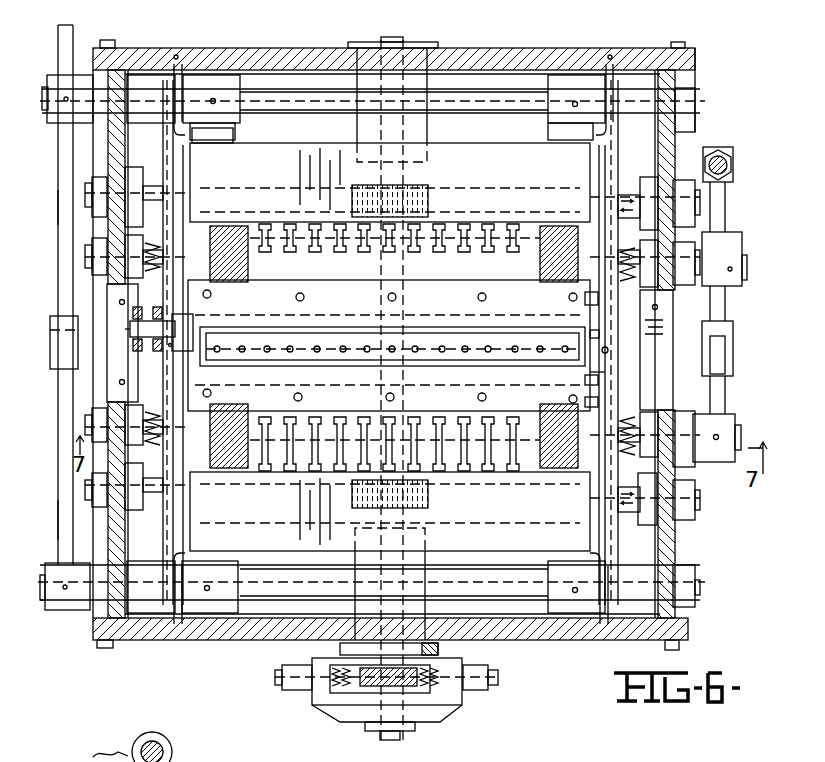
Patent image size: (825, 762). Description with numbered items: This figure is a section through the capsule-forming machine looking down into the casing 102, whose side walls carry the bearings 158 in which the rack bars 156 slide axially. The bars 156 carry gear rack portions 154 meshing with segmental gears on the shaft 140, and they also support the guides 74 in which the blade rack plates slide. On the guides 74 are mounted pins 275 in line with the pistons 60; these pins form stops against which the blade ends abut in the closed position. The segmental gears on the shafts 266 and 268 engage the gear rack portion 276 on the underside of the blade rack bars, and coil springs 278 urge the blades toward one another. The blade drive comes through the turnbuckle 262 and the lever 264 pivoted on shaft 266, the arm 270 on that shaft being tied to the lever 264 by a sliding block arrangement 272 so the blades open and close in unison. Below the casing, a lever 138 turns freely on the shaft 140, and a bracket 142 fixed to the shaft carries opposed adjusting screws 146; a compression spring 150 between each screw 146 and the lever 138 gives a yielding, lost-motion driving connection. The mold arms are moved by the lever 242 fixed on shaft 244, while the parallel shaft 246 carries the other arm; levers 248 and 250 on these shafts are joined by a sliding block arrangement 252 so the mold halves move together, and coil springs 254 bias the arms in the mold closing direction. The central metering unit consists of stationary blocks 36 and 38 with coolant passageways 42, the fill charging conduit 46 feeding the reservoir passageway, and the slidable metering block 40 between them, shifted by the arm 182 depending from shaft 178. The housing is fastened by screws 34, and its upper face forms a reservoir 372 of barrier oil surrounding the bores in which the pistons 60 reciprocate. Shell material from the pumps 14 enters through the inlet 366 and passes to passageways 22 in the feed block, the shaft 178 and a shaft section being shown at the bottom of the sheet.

The pumps 14 is at (278, 159).
The passageways 22 is at (368, 425).
The screws 34 is at (486, 298).
The stationary block 36 is at (346, 305).
The stationary block 38 is at (442, 396).
The metering block 40 is at (188, 322).
The internal passageways 42 is at (600, 300).
The fill charging conduit 46 is at (600, 334).
The pistons 60 is at (290, 345).
The guides 74 is at (165, 391).
The casing 102 is at (590, 636).
The lever 138 is at (370, 680).
The shaft 140 is at (426, 522).
The bracket 142 is at (325, 706).
The adjusting screws 146 is at (283, 681).
The compression spring 150 is at (345, 658).
The gear rack portions 154 is at (428, 190).
The bars 156 is at (150, 190).
The bearings 158 is at (131, 170).
The shaft 178 is at (160, 748).
The arm 182 is at (137, 348).
The lever 242 is at (70, 45).
The shaft 244 is at (296, 112).
The shaft 246 is at (280, 557).
The lever 248 is at (58, 207).
The lever 250 is at (58, 523).
The sliding block arrangement 252 is at (50, 357).
The coil springs 254 is at (178, 75).
The turnbuckle 262 is at (733, 155).
The lever 264 is at (726, 205).
The shaft 266 is at (92, 253).
The shaft 268 is at (92, 423).
The arm 270 is at (726, 385).
The sliding block arrangement 272 is at (733, 352).
The pins 275 is at (170, 352).
The gear rack portion 276 is at (235, 228).
The coil springs 278 is at (611, 250).
The inlet 366 is at (612, 372).
The reservoir 372 is at (455, 332).